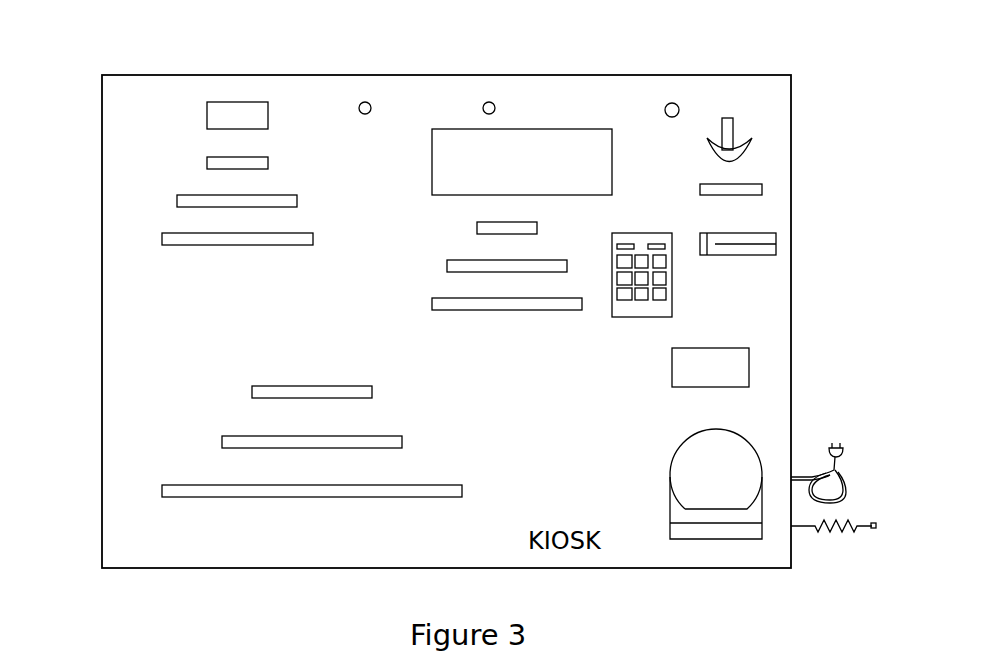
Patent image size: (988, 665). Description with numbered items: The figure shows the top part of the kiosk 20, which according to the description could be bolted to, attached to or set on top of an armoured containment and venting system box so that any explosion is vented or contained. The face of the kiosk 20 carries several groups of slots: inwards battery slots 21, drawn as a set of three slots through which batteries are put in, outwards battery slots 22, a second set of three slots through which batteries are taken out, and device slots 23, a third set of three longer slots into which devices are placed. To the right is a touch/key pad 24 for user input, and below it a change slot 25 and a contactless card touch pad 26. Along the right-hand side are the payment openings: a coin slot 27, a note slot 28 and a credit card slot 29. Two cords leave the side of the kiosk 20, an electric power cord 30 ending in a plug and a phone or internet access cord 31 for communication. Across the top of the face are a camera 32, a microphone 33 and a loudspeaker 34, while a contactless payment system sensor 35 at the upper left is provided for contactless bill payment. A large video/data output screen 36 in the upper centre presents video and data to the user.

The kiosk 20 is at (446, 321).
The inwards battery slots 21 is at (175, 199).
The outwards battery slots 22 is at (445, 267).
The device slots 23 is at (220, 442).
The touch/key pad 24 is at (676, 292).
The change slot 25 is at (765, 463).
The contactless card touch pad 26 is at (753, 367).
The coin slot 27 is at (737, 136).
The note slot 28 is at (766, 191).
The credit card slot 29 is at (780, 252).
The electric power cord 30 is at (847, 452).
The phone or internet access cord 31 is at (859, 509).
The camera 32 is at (489, 100).
The microphone 33 is at (365, 100).
The loudspeaker 34 is at (672, 101).
The contactless payment system sensor 35 is at (205, 115).
The video/data output screen 36 is at (560, 136).